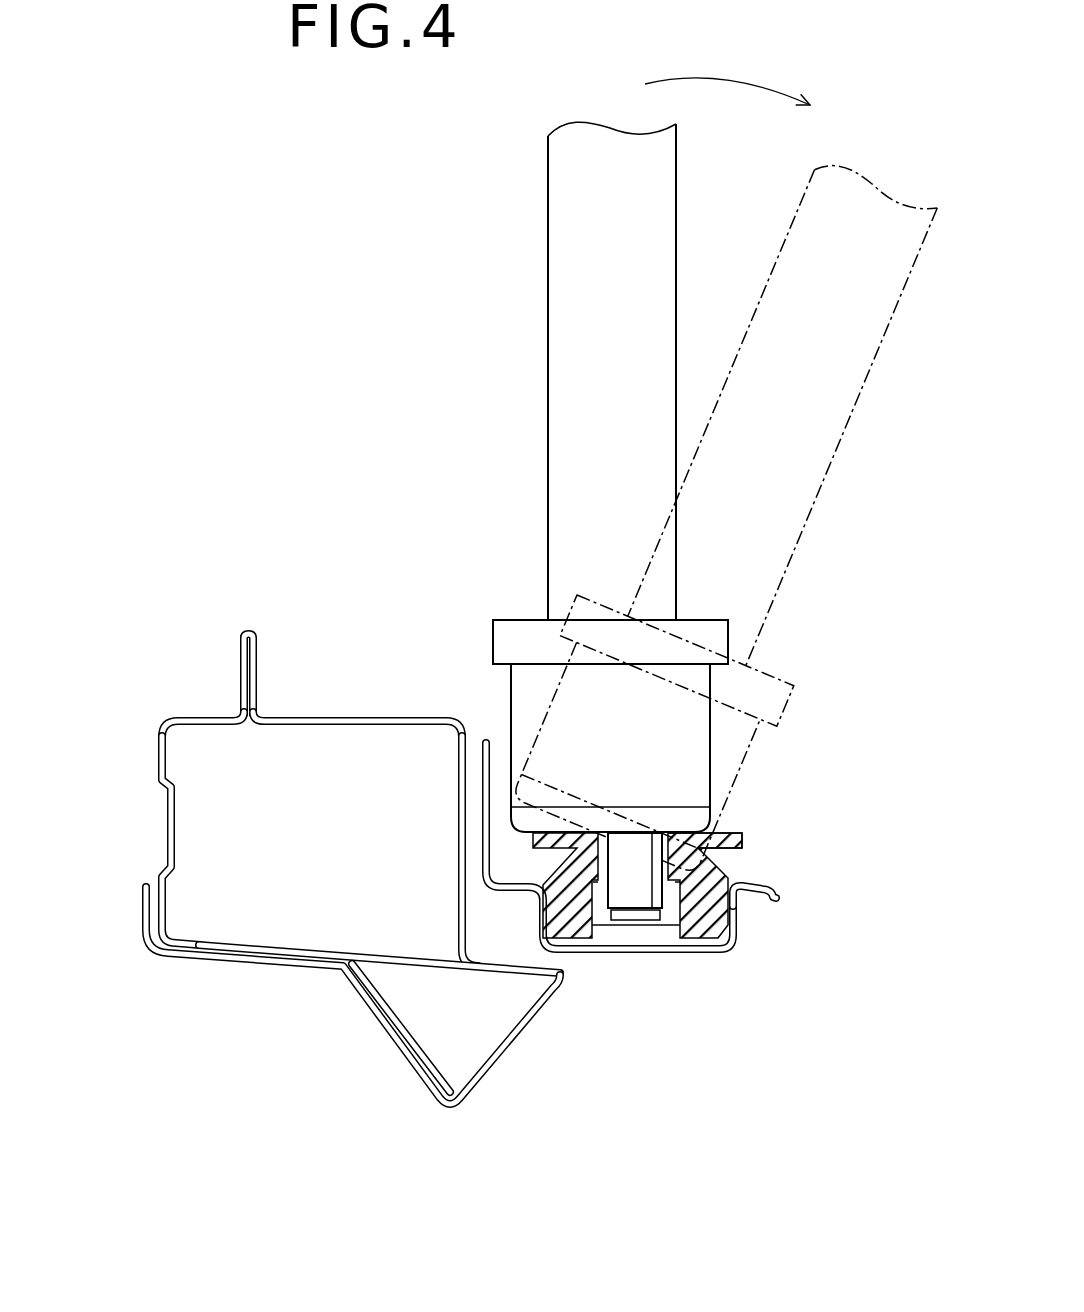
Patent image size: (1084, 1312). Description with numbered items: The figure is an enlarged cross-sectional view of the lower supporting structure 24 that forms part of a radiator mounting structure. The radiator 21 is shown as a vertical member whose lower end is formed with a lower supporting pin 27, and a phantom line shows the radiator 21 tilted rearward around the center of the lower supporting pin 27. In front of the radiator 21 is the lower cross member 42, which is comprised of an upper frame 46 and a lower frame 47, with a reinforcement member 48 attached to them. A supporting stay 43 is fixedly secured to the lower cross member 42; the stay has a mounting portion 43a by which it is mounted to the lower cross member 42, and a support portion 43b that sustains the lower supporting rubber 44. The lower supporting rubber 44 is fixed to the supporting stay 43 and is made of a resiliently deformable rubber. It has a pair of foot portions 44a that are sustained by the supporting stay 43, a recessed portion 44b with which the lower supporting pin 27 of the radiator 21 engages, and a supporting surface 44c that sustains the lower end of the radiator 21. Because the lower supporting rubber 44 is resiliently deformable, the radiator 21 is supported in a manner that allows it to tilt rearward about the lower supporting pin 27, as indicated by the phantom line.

The lower supporting structure 24 is at (275, 192).
The radiator 21 is at (546, 364).
The lower cross member 42 is at (307, 627).
The upper frame 46 is at (385, 716).
The lower frame 47 is at (182, 716).
The supporting stay 43 is at (655, 972).
The mounting portion 43a is at (456, 848).
The support portion 43b is at (705, 947).
The reinforcement member 48 is at (382, 1052).
The lower supporting rubber 44 is at (758, 861).
The foot portions 44a is at (740, 918).
The recessed portion 44b is at (628, 893).
The supporting surface 44c is at (737, 830).
The lower supporting pin 27 is at (625, 912).